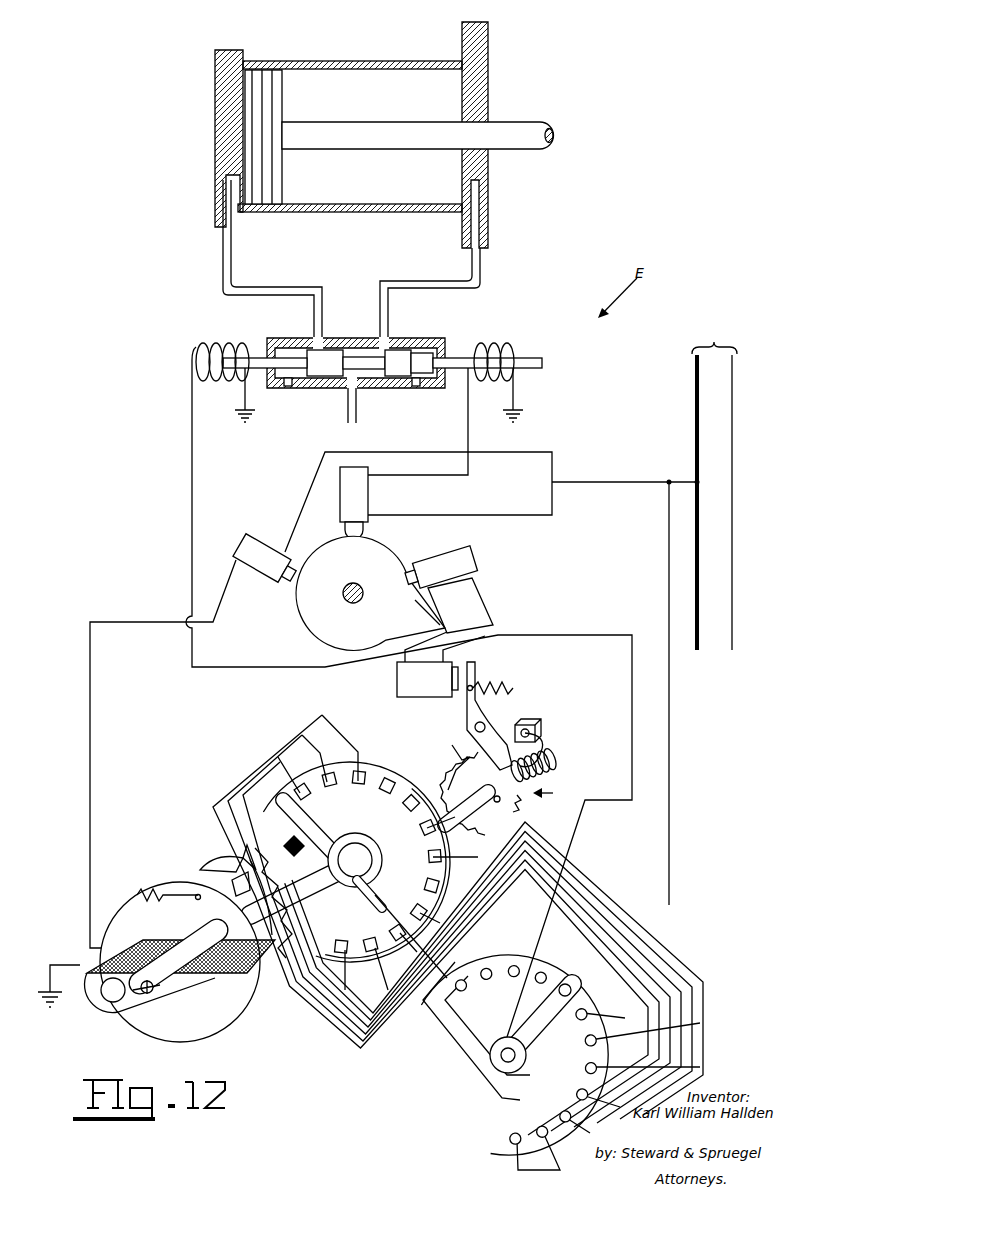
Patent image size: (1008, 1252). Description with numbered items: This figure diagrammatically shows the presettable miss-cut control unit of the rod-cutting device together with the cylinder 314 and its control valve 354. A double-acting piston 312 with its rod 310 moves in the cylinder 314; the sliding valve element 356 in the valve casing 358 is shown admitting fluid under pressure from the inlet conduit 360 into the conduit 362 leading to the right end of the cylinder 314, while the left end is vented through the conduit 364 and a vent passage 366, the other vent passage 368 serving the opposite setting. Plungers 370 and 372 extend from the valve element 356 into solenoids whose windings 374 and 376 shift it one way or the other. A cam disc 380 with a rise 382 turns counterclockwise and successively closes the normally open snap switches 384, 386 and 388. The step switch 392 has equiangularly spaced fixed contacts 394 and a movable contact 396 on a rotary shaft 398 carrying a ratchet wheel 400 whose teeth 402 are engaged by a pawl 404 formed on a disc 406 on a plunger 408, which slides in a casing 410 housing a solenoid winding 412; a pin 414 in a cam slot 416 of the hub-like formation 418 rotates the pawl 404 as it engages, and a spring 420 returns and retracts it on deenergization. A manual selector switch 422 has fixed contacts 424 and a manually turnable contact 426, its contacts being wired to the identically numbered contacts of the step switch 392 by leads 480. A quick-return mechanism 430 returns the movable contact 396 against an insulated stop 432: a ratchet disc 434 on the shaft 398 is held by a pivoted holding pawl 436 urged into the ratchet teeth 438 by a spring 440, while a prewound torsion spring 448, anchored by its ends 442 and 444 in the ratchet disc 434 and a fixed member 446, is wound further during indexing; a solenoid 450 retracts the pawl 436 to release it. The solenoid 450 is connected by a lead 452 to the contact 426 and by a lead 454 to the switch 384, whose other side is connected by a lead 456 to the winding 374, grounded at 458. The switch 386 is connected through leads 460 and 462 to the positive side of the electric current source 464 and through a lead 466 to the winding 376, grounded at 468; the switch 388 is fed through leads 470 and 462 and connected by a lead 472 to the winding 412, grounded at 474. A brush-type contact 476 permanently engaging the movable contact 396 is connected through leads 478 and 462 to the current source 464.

The rod 310 is at (518, 127).
The double-acting piston 312 is at (282, 100).
The cylinder 314 is at (356, 61).
The control valve 354 is at (412, 336).
The sliding valve element 356 is at (360, 357).
The valve casing 358 is at (325, 382).
The inlet conduit 360 is at (355, 413).
The conduit 362 is at (477, 297).
The conduit 364 is at (222, 292).
The vent passage 366 is at (287, 386).
The vent passage 368 is at (418, 386).
The plunger 370 is at (252, 358).
The plunger 372 is at (455, 357).
The solenoid winding 374 is at (217, 333).
The solenoid winding 376 is at (500, 345).
The cam disc 380 is at (383, 553).
The rise 382 is at (418, 602).
The snap switch 384 is at (473, 560).
The snap switch 386 is at (362, 498).
The snap switch 388 is at (260, 548).
The step switch 392 is at (378, 752).
The fixed contacts 394 is at (385, 780).
The movable contact 396 is at (312, 827).
The rotary shaft 398 is at (288, 952).
The ratchet wheel 400 is at (232, 873).
The teeth 402 is at (240, 870).
The pawl 404 is at (238, 902).
The disc 406 is at (170, 913).
The plunger 408 is at (185, 947).
The casing 410 is at (222, 1000).
The solenoid winding 412 is at (233, 965).
The pin 414 is at (147, 983).
The cam slot 416 is at (147, 993).
The hub-like formation 418 is at (137, 1000).
The spring 420 is at (143, 890).
The manual selector switch 422 is at (487, 1105).
The fixed contacts 424 is at (590, 1067).
The manually turnable contact 426 is at (532, 1022).
The quick-return mechanism 430 is at (562, 796).
The insulated stop 432 is at (292, 840).
The ratchet disc 434 is at (463, 768).
The holding pawl 436 is at (493, 733).
The ratchet teeth 438 is at (478, 762).
The spring 440 is at (495, 687).
The end 442 is at (519, 806).
The end 444 is at (537, 733).
The fixed member 446 is at (535, 720).
The torsion spring 448 is at (542, 780).
The solenoid 450 is at (397, 683).
The lead 452 is at (513, 1000).
The lead 454 is at (490, 617).
The lead 456 is at (335, 667).
The ground 458 is at (231, 395).
The lead 460 is at (466, 517).
The lead 462 is at (683, 482).
The electric current source 464 is at (714, 487).
The lead 466 is at (453, 475).
The ground 468 is at (527, 412).
The lead 470 is at (552, 437).
The lead 472 is at (90, 927).
The ground 474 is at (43, 992).
The brush-type contact 476 is at (378, 893).
The lead 478 is at (538, 1052).
The leads 480 is at (588, 853).